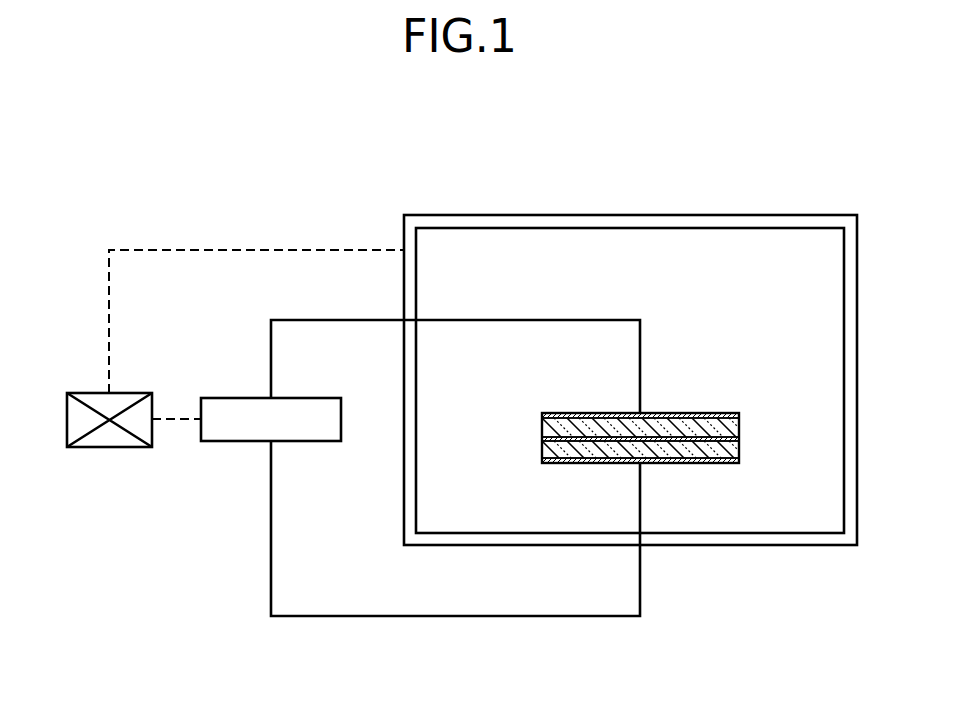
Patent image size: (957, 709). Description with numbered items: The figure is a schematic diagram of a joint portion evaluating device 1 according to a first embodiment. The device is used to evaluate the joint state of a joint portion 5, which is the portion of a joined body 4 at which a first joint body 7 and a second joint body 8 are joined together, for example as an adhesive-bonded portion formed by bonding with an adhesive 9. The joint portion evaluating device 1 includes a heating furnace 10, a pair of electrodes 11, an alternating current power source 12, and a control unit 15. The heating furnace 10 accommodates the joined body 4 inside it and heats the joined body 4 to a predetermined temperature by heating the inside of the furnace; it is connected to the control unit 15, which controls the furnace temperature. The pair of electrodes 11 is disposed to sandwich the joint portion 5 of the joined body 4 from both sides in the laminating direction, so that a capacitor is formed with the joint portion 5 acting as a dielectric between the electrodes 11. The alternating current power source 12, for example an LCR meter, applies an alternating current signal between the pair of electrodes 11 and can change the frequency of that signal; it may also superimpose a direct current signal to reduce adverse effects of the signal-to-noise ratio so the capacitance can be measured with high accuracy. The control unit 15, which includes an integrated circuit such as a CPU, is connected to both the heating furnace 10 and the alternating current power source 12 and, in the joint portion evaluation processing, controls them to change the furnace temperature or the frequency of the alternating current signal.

The joint portion evaluating device 1 is at (757, 180).
The joined body 4 is at (748, 401).
The joint portion 5 is at (636, 435).
The first joint body 7 is at (542, 425).
The second joint body 8 is at (542, 450).
The adhesive 9 is at (542, 439).
The heating furnace 10 is at (645, 216).
The pair of electrodes 11 is at (688, 413).
The alternating current power source 12 is at (228, 398).
The control unit 15 is at (131, 393).